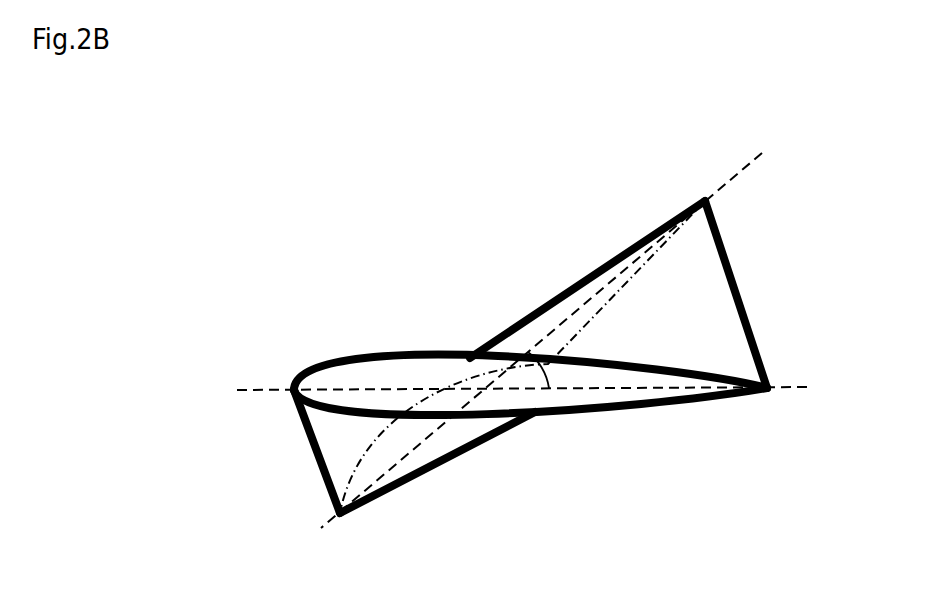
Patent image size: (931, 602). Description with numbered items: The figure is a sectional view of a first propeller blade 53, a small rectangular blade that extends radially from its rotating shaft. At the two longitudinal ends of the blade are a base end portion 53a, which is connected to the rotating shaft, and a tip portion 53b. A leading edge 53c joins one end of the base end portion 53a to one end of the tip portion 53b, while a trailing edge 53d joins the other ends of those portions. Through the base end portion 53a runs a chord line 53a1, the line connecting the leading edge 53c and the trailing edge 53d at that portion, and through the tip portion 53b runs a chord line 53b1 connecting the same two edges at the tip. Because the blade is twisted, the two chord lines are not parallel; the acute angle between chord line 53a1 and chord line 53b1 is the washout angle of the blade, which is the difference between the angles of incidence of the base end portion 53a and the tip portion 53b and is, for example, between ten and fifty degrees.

The first propeller blade 53 is at (514, 317).
The base end portion 53a is at (370, 378).
The chord line of the base end portion 53a1 is at (808, 388).
The tip portion 53b is at (427, 483).
The chord line of the tip portion 53b1 is at (762, 153).
The leading edge 53c is at (310, 448).
The trailing edge 53d is at (727, 244).